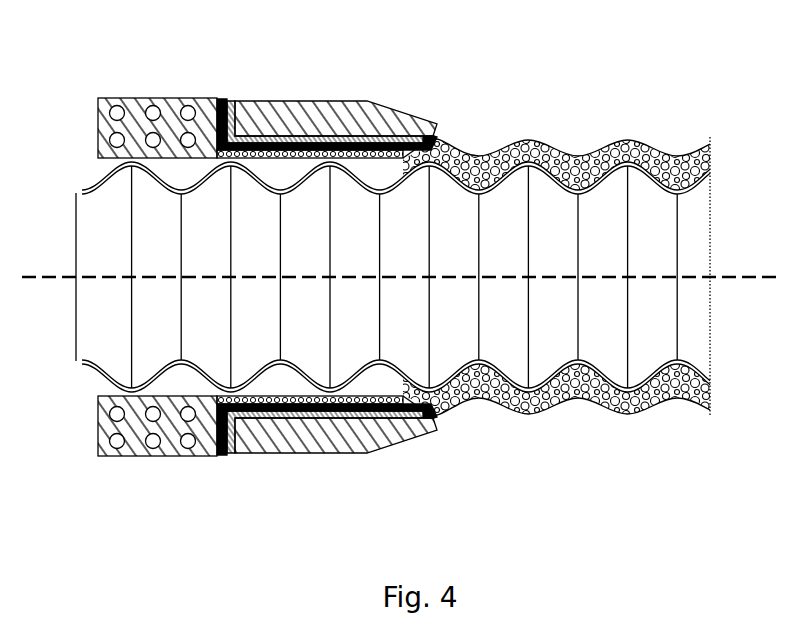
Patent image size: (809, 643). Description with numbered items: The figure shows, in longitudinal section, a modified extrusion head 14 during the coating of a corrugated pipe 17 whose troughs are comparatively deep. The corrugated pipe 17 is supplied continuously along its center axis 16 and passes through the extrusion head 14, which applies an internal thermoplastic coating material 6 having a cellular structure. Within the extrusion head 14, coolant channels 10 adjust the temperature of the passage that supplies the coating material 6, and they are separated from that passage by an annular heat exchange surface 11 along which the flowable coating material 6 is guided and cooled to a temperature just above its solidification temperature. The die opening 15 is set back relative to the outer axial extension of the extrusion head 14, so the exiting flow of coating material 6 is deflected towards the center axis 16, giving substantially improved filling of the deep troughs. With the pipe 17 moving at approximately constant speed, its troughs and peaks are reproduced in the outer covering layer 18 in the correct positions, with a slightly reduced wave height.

The coating material 6 is at (682, 163).
The coolant channels 10 is at (183, 446).
The heat exchange surface 11 is at (267, 419).
The extrusion head 14 is at (288, 110).
The die opening 15 is at (429, 139).
The center axis 16 is at (753, 272).
The corrugated pipe 17 is at (80, 185).
The outer covering layer 18 is at (624, 431).